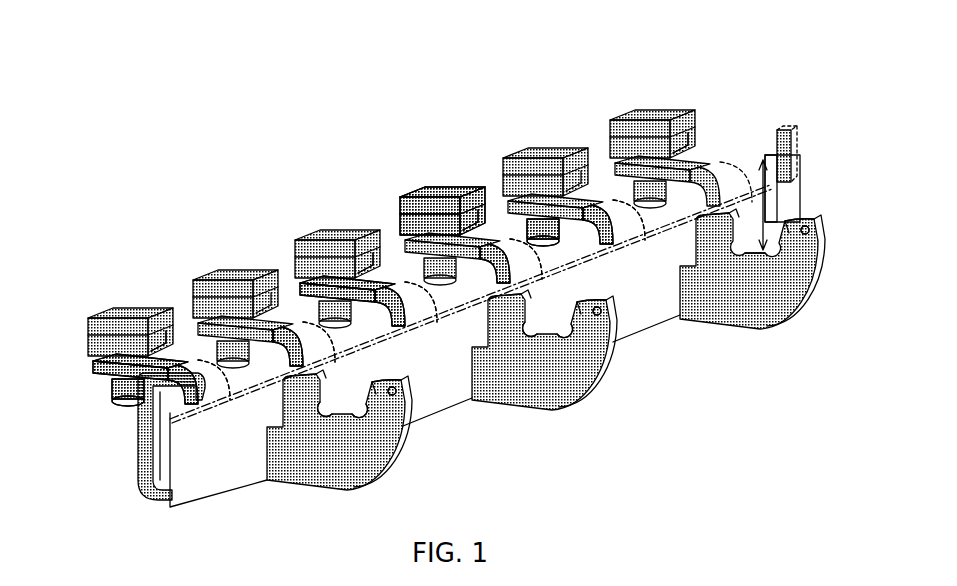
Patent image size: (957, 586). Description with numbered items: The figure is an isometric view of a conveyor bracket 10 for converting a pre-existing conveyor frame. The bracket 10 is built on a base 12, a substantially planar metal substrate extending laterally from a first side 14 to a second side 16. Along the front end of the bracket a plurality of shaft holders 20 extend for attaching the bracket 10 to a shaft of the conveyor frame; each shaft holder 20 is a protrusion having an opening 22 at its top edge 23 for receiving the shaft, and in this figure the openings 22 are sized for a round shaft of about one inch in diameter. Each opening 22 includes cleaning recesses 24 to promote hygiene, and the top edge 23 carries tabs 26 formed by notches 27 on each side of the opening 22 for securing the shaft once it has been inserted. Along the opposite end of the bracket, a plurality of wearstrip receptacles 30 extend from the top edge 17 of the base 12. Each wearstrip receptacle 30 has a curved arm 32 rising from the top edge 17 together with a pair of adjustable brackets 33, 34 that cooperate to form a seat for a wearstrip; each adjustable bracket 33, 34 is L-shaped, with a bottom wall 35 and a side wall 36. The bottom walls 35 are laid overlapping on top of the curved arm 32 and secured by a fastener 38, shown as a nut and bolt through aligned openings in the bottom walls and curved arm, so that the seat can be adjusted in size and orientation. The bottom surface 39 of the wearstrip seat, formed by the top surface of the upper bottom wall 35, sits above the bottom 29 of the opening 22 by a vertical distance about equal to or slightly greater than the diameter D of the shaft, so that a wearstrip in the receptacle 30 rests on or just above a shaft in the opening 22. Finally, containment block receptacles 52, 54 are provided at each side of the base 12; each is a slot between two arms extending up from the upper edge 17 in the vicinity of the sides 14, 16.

The conveyor bracket 10 is at (470, 133).
The base 12 is at (471, 346).
The first side 14 is at (140, 458).
The second side 16 is at (803, 165).
The top edge 17 is at (451, 308).
The shaft holder 20 is at (322, 490).
The opening 22 is at (331, 392).
The top edge 23 is at (377, 384).
The cleaning recess 24 is at (317, 413).
The tab 26 is at (283, 387).
The notch 27 is at (287, 393).
The bottom 29 is at (763, 253).
The wearstrip receptacle 30 is at (113, 294).
The curved arm 32 is at (197, 357).
The adjustable bracket 33 is at (397, 214).
The adjustable bracket 34 is at (445, 190).
The bottom wall 35 is at (158, 352).
The side wall 36 is at (367, 247).
The fastener 38 is at (115, 393).
The bottom surface 39 is at (673, 150).
The containment block receptacle 52 is at (173, 400).
The containment block receptacle 54 is at (768, 152).
The diameter D is at (755, 205).